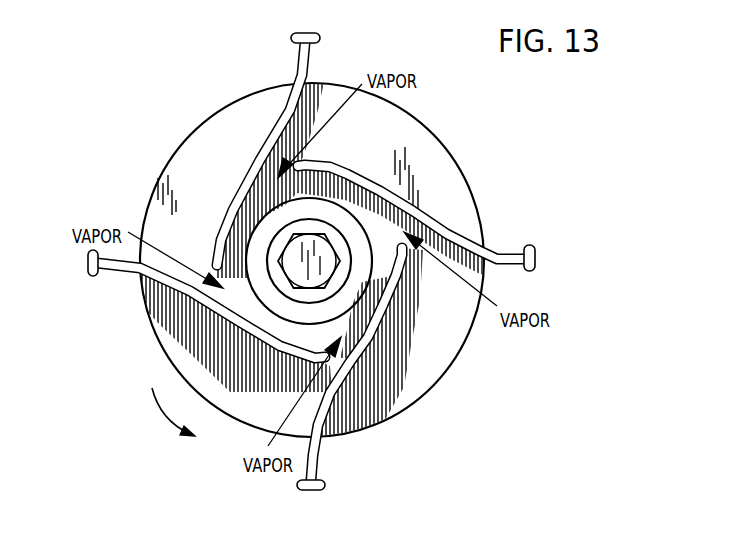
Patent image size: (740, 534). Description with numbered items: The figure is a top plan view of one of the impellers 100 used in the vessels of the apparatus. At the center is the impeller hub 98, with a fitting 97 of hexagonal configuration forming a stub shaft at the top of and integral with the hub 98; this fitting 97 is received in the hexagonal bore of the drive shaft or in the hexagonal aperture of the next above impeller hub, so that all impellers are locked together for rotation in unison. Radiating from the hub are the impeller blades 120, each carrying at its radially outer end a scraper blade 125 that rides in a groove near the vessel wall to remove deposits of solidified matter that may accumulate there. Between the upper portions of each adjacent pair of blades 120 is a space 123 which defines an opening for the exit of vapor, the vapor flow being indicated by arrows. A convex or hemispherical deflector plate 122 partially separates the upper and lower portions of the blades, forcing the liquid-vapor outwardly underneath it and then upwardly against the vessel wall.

The impeller 100 is at (452, 148).
The impeller blade 120 is at (299, 60).
The space between adjacent blades 123 is at (303, 153).
The scraper blade 125 is at (293, 33).
The fitting 97 is at (288, 234).
The impeller hub 98 is at (347, 298).
The deflector plate 122 is at (173, 352).